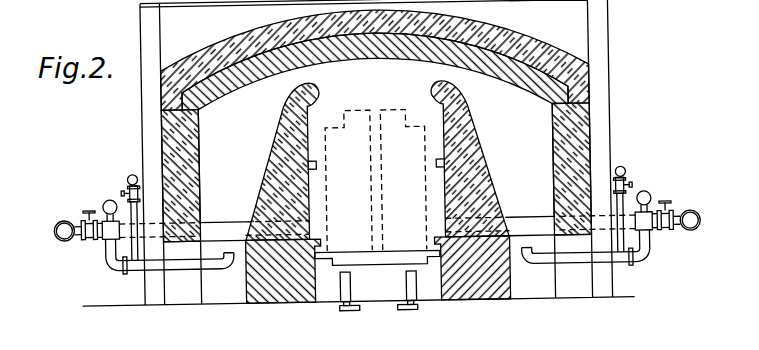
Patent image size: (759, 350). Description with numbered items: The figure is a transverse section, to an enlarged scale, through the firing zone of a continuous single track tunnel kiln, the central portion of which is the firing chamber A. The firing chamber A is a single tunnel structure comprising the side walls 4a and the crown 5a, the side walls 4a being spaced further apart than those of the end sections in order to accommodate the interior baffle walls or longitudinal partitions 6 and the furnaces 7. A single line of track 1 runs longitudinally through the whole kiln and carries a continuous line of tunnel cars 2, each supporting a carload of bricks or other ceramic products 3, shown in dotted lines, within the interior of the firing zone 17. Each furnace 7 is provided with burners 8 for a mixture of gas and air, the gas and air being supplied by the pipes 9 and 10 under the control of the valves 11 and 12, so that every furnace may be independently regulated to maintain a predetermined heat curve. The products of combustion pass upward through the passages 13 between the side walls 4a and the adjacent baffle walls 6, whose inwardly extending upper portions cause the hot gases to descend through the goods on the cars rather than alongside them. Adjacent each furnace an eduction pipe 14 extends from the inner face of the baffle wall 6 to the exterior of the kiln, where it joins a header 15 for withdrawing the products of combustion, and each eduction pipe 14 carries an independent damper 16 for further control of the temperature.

The track 1 is at (352, 307).
The tunnel car 2 is at (386, 257).
The bricks or ceramic products 3 is at (413, 131).
The side wall 4a is at (170, 142).
The crown 5a is at (213, 80).
The baffle wall 6 is at (264, 166).
The furnace 7 is at (378, 263).
The burner 8 is at (182, 262).
The gas pipe 9 is at (132, 170).
The air pipe 10 is at (104, 198).
The gas valve 11 is at (120, 186).
The air valve 12 is at (98, 238).
The passage 13 is at (376, 162).
The eduction pipe 14 is at (218, 224).
The header 15 is at (52, 226).
The damper 16 is at (82, 212).
The interior of the firing zone 17 is at (375, 85).
The firing chamber A is at (375, 58).